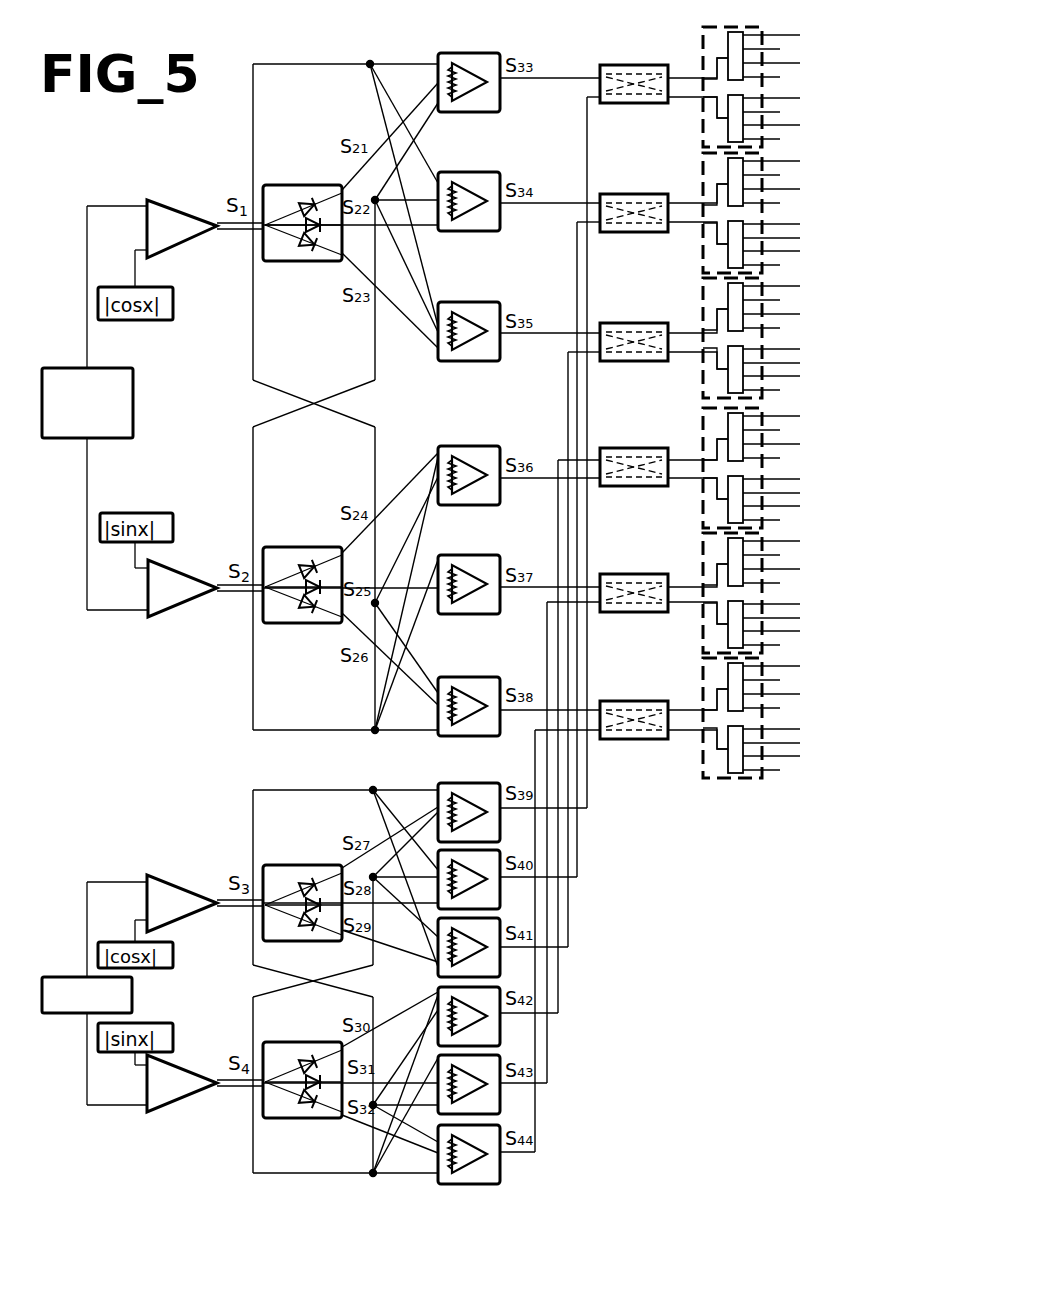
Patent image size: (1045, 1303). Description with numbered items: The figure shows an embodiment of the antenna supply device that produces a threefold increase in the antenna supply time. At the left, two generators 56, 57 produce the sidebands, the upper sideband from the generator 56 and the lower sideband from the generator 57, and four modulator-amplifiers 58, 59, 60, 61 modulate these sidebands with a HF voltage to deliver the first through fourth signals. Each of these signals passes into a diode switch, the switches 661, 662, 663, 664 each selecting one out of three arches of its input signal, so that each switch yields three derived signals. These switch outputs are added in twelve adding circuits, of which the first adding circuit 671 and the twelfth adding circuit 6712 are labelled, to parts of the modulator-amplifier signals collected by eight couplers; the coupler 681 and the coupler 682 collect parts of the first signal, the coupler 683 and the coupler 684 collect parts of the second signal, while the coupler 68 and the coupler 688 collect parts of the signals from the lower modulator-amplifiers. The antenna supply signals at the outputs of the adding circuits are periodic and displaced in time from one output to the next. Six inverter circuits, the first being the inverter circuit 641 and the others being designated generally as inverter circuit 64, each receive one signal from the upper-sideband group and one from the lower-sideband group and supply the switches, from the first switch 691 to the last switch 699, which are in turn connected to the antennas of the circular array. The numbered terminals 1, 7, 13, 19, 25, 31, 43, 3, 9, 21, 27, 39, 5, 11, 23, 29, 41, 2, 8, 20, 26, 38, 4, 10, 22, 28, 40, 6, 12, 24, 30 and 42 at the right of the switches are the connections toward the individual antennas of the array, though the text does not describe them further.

The generator 56 is at (82, 368).
The generator 57 is at (78, 974).
The modulator-amplifier 58 is at (173, 200).
The modulator-amplifier 59 is at (178, 615).
The modulator-amplifier 60 is at (170, 877).
The modulator-amplifier 61 is at (176, 1103).
The inverter circuit 64 is at (650, 365).
The first inverter circuit 641 is at (646, 66).
The diode switch 661 is at (308, 186).
The diode switch 662 is at (310, 626).
The diode switch 663 is at (308, 864).
The diode switch 664 is at (310, 1124).
The adding circuit 671 is at (482, 113).
The adding circuit 6712 is at (502, 1180).
The coupler 68 is at (227, 917).
The coupler 681 is at (224, 223).
The coupler 682 is at (226, 232).
The coupler 683 is at (228, 574).
The coupler 684 is at (226, 594).
The coupler 688 is at (232, 1088).
The switch 691 is at (706, 129).
The switch 699 is at (718, 780).
The winding terminal 1 is at (779, 34).
The winding terminal 2 is at (779, 415).
The winding terminal 3 is at (779, 160).
The winding terminal 4 is at (779, 540).
The winding terminal 5 is at (779, 285).
The winding terminal 6 is at (779, 665).
The winding terminal 7 is at (769, 50).
The winding terminal 8 is at (769, 431).
The winding terminal 9 is at (769, 176).
The winding terminal 10 is at (775, 556).
The winding terminal 11 is at (775, 301).
The winding terminal 12 is at (775, 681).
The winding terminal 13 is at (784, 63).
The winding terminal 19 is at (775, 78).
The winding terminal 20 is at (775, 459).
The winding terminal 21 is at (775, 204).
The winding terminal 22 is at (775, 584).
The winding terminal 23 is at (775, 329).
The winding terminal 24 is at (775, 709).
The winding terminal 25 is at (784, 97).
The winding terminal 26 is at (784, 478).
The winding terminal 27 is at (784, 223).
The winding terminal 28 is at (784, 603).
The winding terminal 29 is at (784, 348).
The winding terminal 30 is at (784, 728).
The winding terminal 31 is at (775, 113).
The winding terminal 38 is at (775, 521).
The winding terminal 39 is at (775, 266).
The winding terminal 40 is at (775, 646).
The winding terminal 41 is at (775, 391).
The winding terminal 42 is at (775, 771).
The winding terminal 43 is at (775, 140).